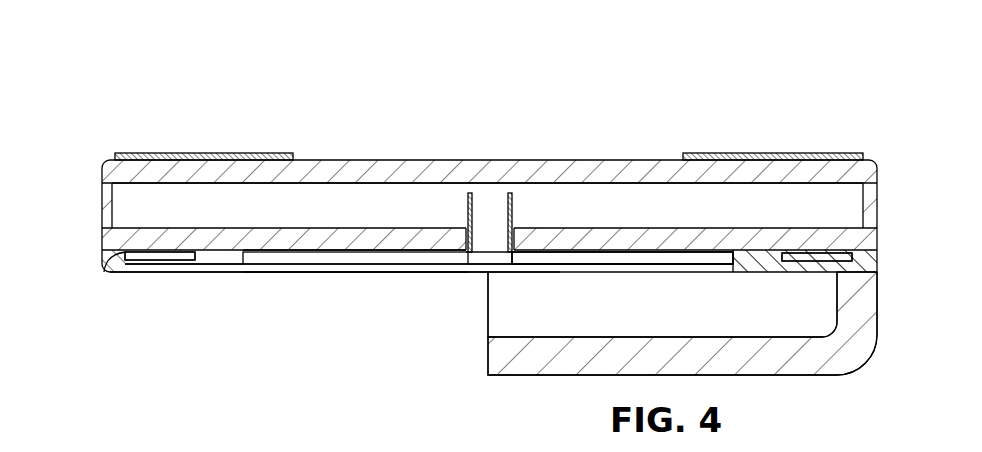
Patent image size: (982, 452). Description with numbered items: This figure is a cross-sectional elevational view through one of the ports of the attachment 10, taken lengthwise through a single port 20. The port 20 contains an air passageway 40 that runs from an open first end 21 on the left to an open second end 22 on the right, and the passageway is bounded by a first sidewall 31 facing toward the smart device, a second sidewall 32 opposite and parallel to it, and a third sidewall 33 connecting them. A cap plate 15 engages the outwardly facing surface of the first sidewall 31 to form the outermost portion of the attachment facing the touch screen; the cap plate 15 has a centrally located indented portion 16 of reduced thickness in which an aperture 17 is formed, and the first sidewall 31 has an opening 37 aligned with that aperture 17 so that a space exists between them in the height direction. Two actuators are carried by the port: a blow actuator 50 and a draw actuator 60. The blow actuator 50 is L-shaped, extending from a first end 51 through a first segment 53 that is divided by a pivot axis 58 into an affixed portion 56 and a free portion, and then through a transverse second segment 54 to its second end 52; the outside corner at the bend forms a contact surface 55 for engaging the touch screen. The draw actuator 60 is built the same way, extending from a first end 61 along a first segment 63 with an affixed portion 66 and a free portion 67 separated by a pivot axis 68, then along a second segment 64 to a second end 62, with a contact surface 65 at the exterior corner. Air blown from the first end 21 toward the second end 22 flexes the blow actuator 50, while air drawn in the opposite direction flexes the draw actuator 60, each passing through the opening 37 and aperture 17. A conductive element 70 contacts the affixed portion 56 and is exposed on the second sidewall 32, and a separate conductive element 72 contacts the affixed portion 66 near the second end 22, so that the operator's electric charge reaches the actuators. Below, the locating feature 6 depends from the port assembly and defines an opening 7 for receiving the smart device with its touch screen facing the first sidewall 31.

The attachment 10 is at (120, 84).
The port 20 is at (874, 137).
The first end 21 is at (100, 190).
The second end 22 is at (881, 195).
The second sidewall 32 is at (330, 160).
The third sidewall 33 is at (197, 210).
The indented portion 16 is at (305, 272).
The aperture 17 is at (406, 272).
The first sidewall 31 is at (318, 272).
The cap plate 15 is at (210, 272).
The air passageway 40 is at (140, 209).
The conductive element 70 is at (210, 153).
The conductive element 72 is at (810, 253).
The second end 52 is at (469, 193).
The second segment 54 is at (466, 207).
The second end 62 is at (511, 193).
The second segment 64 is at (514, 207).
The opening 37 is at (488, 237).
The pivot axis 58 is at (252, 250).
The first segment 53 is at (185, 272).
The affixed portion 56 is at (160, 256).
The blow actuator 50 is at (265, 266).
The first end 51 is at (110, 270).
The draw actuator 60 is at (714, 240).
The first segment 63 is at (636, 250).
The free portion 67 is at (622, 258).
The affixed portion 66 is at (817, 257).
The pivot axis 68 is at (733, 262).
The first end 61 is at (870, 270).
The contact surface 55 is at (453, 272).
The contact surface 65 is at (520, 272).
The opening 7 is at (503, 304).
The locating feature 6 is at (858, 376).